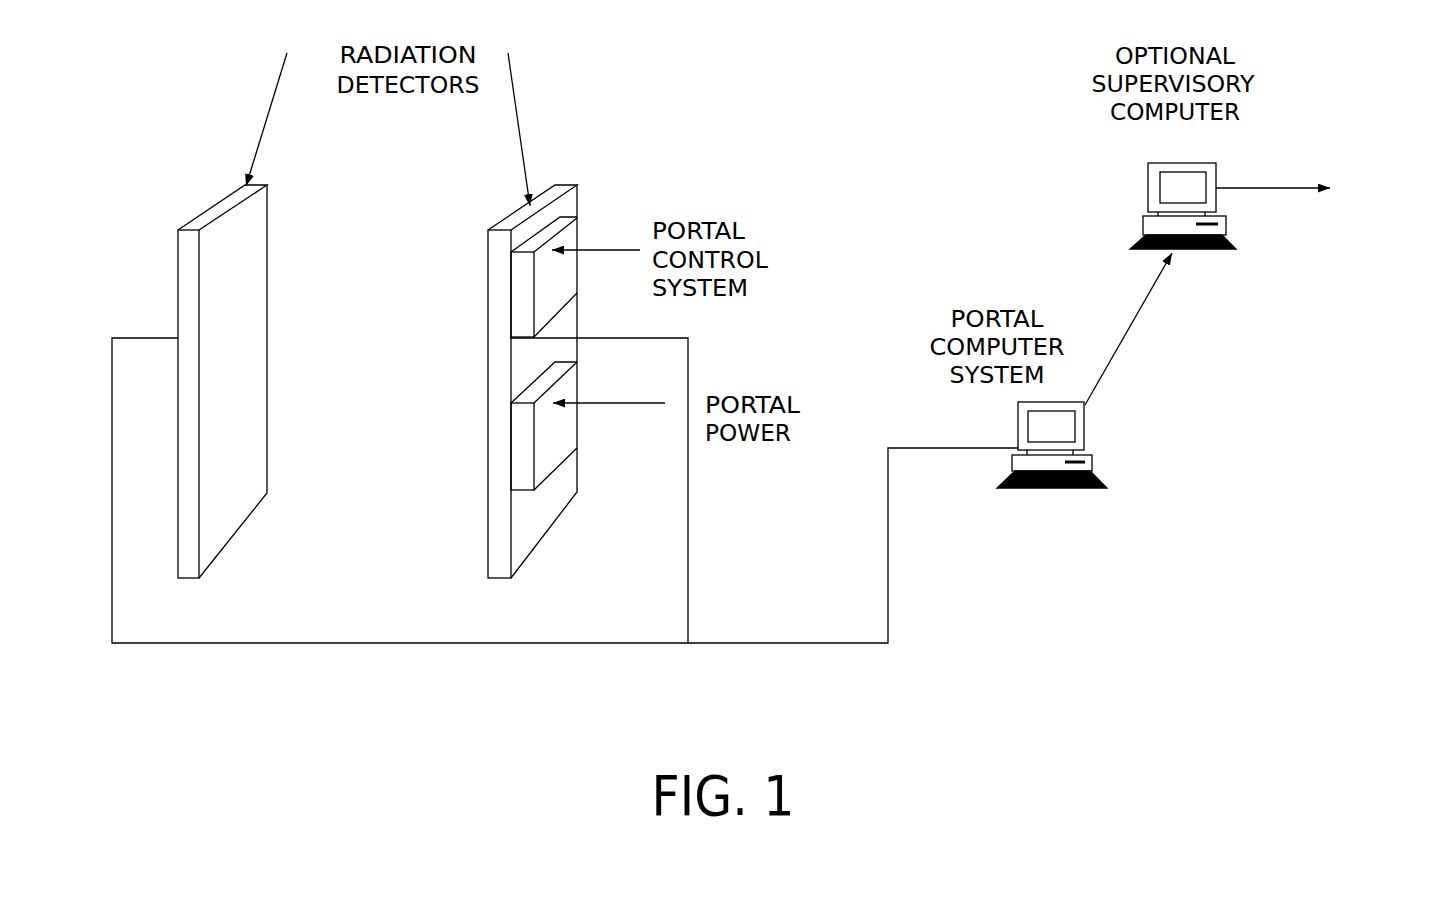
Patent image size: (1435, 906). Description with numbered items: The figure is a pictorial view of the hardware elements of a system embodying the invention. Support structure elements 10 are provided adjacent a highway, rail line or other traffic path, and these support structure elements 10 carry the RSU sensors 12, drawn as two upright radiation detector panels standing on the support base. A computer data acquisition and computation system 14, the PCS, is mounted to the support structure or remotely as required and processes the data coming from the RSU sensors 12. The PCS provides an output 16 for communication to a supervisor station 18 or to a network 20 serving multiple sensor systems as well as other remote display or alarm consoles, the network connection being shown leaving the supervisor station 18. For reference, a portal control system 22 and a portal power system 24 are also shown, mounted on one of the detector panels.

The support structure elements 10 is at (178, 405).
The RSU sensors 12 is at (178, 236).
The computer data acquisition and computation system 14 is at (1088, 425).
The output 16 is at (1150, 297).
The supervisor station 18 is at (1148, 189).
The network 20 is at (1283, 186).
The portal control system 22 is at (553, 293).
The portal power system 24 is at (562, 440).